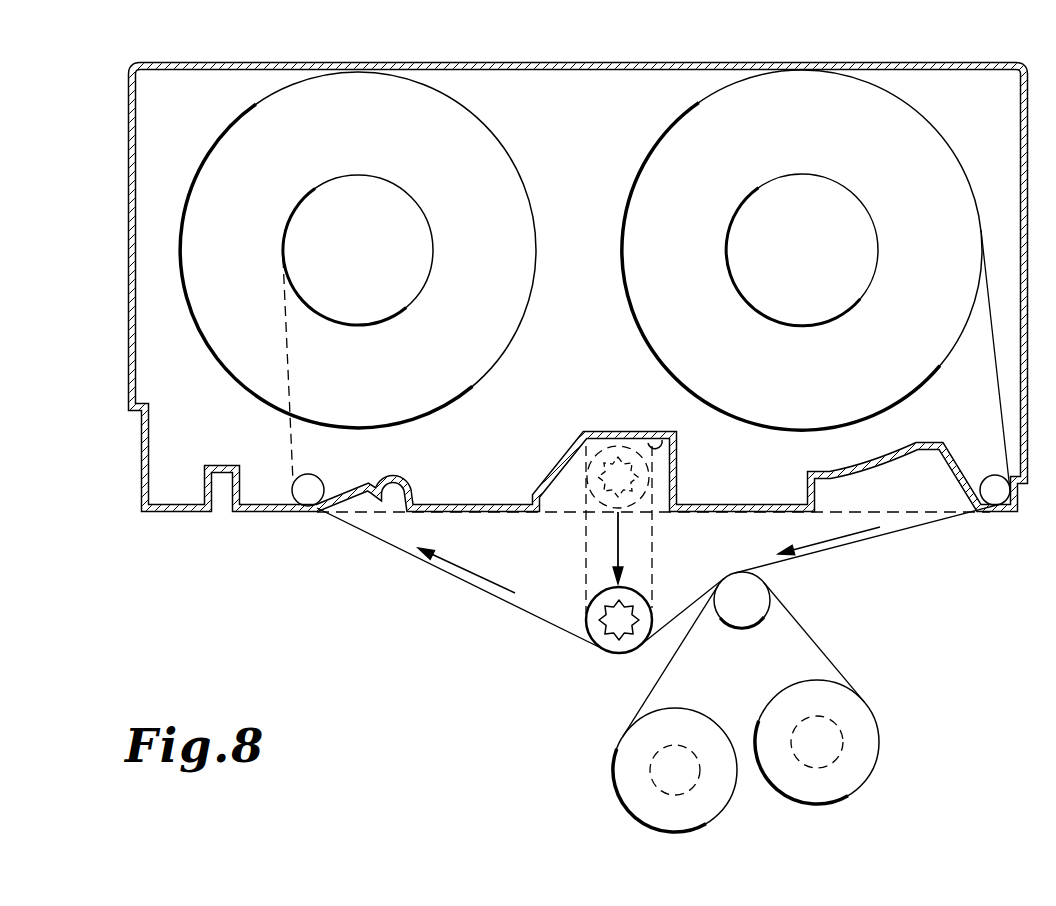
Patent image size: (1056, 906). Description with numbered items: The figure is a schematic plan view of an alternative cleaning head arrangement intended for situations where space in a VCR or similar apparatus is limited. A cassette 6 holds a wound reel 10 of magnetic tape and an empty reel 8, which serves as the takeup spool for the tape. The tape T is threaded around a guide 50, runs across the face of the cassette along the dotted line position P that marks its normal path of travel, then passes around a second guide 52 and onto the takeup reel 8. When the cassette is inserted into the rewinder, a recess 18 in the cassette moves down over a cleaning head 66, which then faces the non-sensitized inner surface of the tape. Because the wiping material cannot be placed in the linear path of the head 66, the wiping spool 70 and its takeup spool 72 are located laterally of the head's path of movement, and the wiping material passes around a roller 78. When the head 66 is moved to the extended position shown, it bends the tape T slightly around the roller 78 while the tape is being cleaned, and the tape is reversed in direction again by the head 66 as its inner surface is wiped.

The cassette 6 is at (127, 176).
The empty reel 8 is at (192, 186).
The wound reel 10 is at (631, 196).
The recess 18 is at (662, 440).
The guide 50 is at (992, 480).
The second guide 52 is at (313, 486).
The cleaning head 66 is at (653, 478).
The wiping spool 70 is at (880, 735).
The takeup spool 72 is at (667, 710).
The roller 78 is at (741, 629).
The dotted line position P is at (557, 515).
The tape T is at (943, 528).